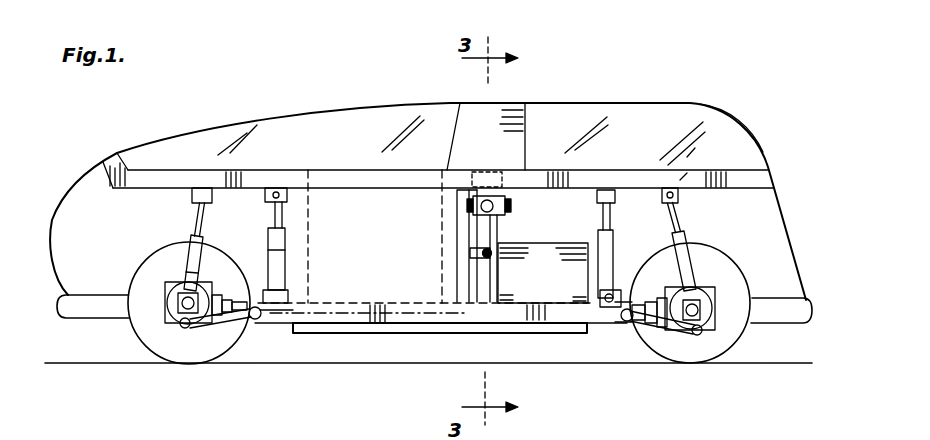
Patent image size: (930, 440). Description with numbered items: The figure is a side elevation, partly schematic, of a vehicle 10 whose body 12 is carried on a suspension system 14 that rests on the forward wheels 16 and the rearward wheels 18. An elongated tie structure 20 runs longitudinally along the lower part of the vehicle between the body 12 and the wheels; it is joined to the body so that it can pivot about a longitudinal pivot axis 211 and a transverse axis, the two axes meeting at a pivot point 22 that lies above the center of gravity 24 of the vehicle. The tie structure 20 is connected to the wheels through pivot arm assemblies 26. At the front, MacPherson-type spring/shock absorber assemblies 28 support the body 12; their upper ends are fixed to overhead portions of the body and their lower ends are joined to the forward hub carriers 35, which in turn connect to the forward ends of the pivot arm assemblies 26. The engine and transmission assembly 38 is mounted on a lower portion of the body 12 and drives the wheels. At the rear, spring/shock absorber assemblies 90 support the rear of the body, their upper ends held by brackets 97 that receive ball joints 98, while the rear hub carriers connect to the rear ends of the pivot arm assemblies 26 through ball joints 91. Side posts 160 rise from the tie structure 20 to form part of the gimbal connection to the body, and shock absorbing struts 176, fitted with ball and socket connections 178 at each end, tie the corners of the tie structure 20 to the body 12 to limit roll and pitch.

The vehicle 10 is at (283, 86).
The body 12 is at (377, 97).
The suspension system 14 is at (264, 346).
The forward wheels 16 is at (128, 330).
The rearward wheels 18 is at (763, 262).
The tie structure 20 is at (290, 338).
The pivot point 22 is at (480, 195).
The center of gravity 24 is at (477, 257).
The pivot arm assemblies 26 is at (211, 343).
The spring/shock absorber assemblies 28 is at (183, 260).
The forward hub carriers 35 is at (190, 303).
The engine and transmission assembly 38 is at (548, 279).
The rear spring/shock absorber assemblies 90 is at (682, 222).
The ball joints 91 is at (703, 335).
The brackets 97 is at (712, 122).
The ball joints 98 is at (682, 194).
The side posts 160 is at (492, 228).
The shock absorbing struts 176 is at (290, 246).
The ball and socket connection 178 is at (290, 195).
The support column 211 is at (460, 207).